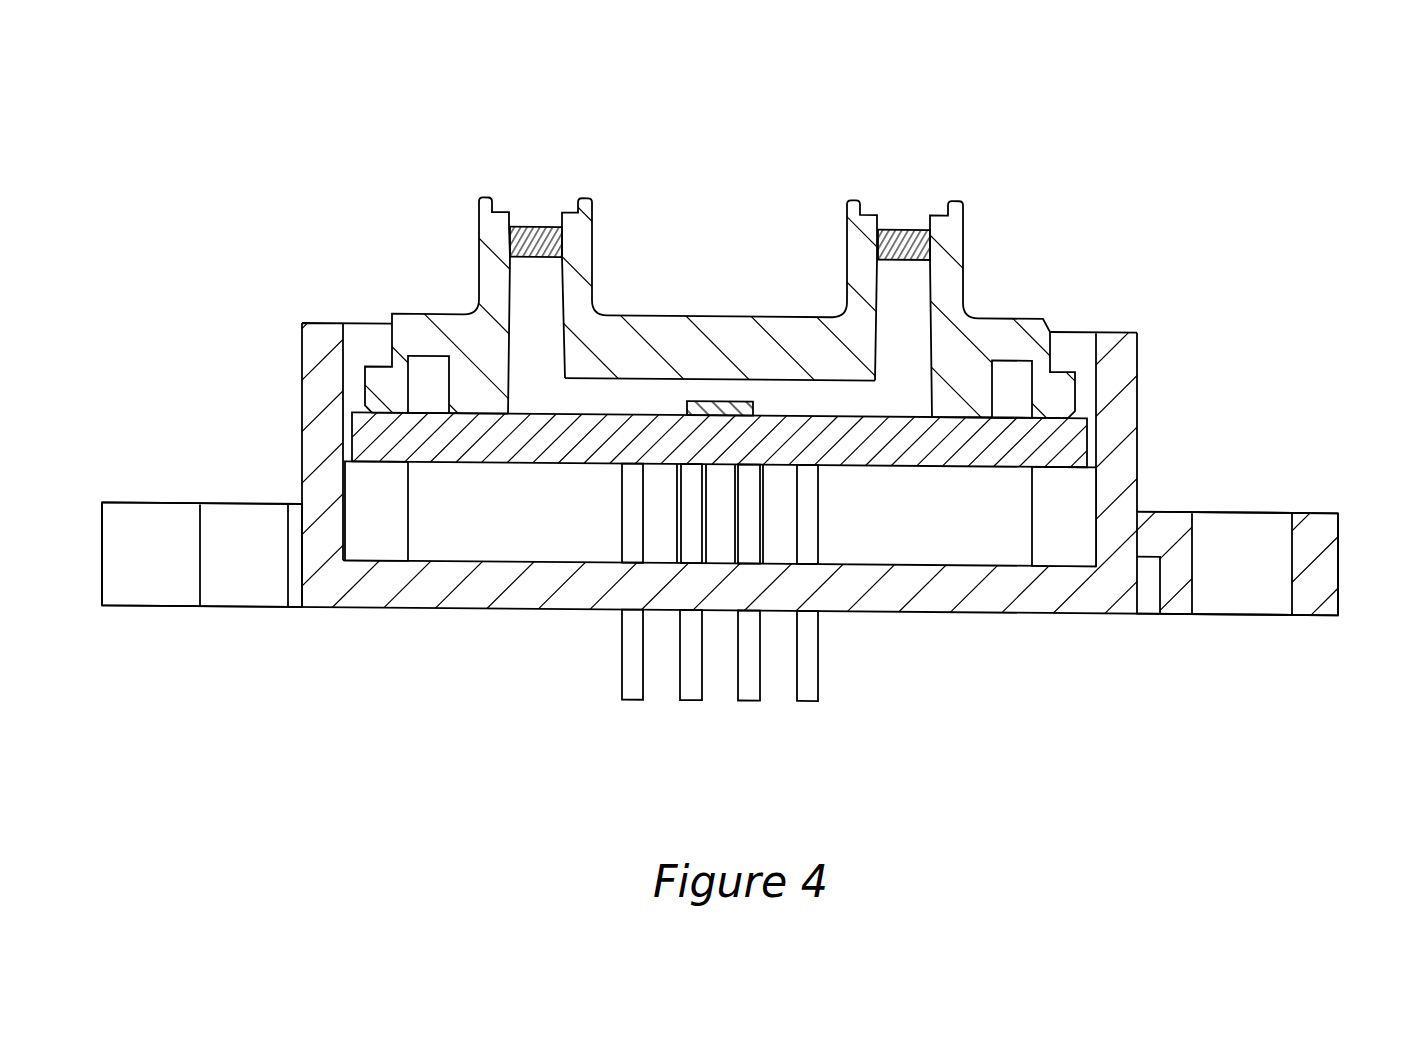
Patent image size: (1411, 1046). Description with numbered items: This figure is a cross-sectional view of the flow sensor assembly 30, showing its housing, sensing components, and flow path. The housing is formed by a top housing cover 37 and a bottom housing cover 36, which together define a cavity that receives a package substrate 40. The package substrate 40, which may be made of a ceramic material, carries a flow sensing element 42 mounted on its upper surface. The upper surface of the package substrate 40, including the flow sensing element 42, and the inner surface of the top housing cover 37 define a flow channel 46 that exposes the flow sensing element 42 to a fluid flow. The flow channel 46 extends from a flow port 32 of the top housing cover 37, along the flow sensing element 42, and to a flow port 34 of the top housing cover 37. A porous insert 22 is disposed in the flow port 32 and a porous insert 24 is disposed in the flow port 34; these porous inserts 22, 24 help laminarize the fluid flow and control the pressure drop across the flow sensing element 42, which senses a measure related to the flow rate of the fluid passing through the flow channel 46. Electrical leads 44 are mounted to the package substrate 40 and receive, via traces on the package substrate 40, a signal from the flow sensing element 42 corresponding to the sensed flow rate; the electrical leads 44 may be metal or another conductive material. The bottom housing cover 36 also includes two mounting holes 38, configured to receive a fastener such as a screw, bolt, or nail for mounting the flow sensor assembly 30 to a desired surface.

The flow sensor assembly 30 is at (1134, 112).
The porous insert 22 is at (537, 227).
The porous insert 24 is at (904, 230).
The flow port 32 is at (588, 244).
The flow port 34 is at (957, 248).
The bottom housing cover 36 is at (1127, 413).
The top housing cover 37 is at (713, 323).
The mounting holes 38 is at (237, 515).
The package substrate 40 is at (1005, 438).
The flow sensing element 42 is at (699, 401).
The electrical leads 44 is at (747, 683).
The flow channel 46 is at (835, 398).